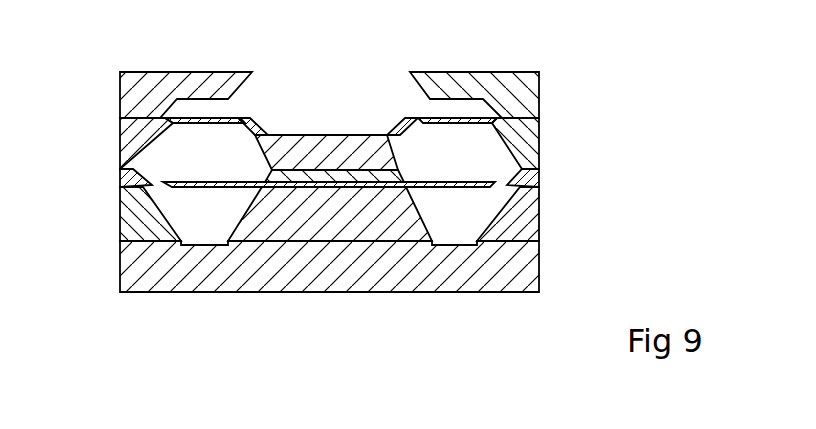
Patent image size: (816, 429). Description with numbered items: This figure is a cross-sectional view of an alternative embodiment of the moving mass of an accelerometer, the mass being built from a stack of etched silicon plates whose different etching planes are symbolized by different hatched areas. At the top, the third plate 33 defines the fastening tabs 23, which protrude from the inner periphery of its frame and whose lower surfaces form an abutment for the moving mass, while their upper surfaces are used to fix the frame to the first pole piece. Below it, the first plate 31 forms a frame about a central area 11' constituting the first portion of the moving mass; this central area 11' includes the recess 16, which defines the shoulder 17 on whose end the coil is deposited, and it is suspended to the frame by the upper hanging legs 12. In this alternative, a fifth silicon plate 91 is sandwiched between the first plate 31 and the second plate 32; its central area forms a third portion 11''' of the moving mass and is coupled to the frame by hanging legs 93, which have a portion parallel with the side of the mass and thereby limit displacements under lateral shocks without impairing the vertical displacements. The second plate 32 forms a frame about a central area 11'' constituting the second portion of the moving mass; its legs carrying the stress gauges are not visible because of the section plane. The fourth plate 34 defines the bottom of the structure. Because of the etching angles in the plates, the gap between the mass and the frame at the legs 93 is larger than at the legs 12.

The fastening tabs 23 is at (219, 82).
The third portion of the moving mass 11''' is at (334, 107).
The recess 16 is at (344, 120).
The shoulder 17 is at (243, 125).
The first plate 31 is at (120, 135).
The fifth silicon plate 91 is at (133, 176).
The second plate 32 is at (137, 215).
The upper hanging legs 12 is at (190, 124).
The central area of the first plate 11' is at (350, 152).
The hanging legs 93 is at (200, 188).
The third plate 33 is at (527, 93).
The fourth plate 34 is at (527, 258).
The central area of the second plate 11'' is at (303, 260).